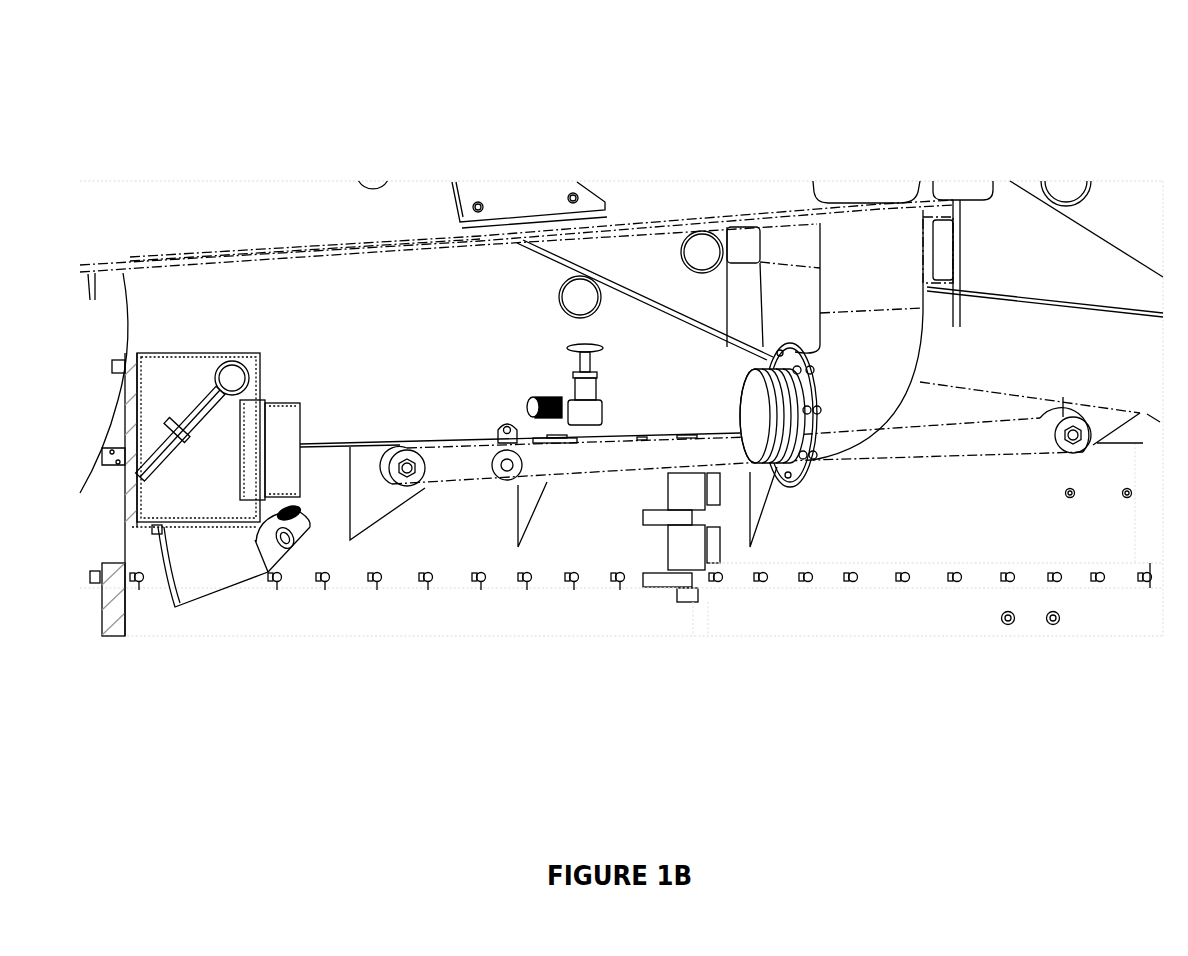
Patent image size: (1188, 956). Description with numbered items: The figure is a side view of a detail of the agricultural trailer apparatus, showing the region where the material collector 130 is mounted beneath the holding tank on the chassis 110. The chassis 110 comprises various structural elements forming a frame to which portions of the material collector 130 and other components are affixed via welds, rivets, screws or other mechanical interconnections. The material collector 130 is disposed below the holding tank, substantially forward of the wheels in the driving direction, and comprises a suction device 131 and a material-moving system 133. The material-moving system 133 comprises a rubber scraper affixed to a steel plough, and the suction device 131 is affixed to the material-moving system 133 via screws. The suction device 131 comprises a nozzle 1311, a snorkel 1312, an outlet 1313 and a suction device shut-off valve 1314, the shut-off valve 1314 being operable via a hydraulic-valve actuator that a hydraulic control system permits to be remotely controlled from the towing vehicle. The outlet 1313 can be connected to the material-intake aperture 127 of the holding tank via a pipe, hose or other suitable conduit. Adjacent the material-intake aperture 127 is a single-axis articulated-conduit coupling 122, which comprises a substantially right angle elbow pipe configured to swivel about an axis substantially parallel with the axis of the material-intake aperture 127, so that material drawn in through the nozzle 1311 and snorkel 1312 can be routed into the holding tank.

The chassis 110 is at (1019, 152).
The material-intake aperture 127 is at (862, 195).
The single-axis articulated-conduit coupling 122 is at (740, 387).
The material collector 130 is at (587, 680).
The material-moving system 133 is at (838, 637).
The suction device 131 is at (198, 622).
The nozzle 1311 is at (217, 580).
The snorkel 1312 is at (310, 548).
The outlet 1313 is at (292, 402).
The suction device shut-off valve 1314 is at (191, 380).